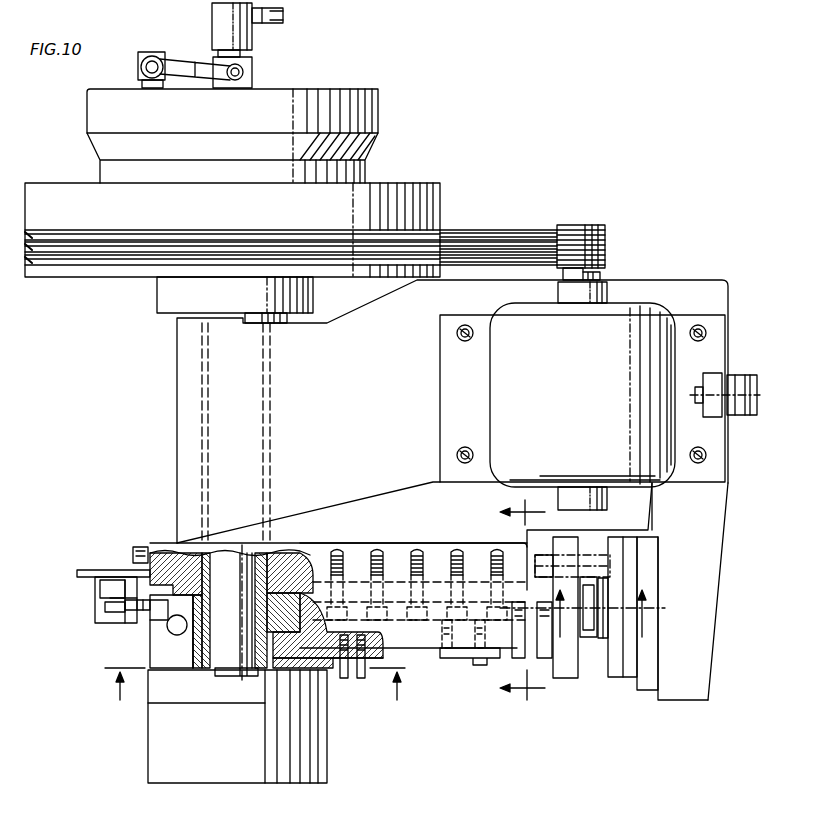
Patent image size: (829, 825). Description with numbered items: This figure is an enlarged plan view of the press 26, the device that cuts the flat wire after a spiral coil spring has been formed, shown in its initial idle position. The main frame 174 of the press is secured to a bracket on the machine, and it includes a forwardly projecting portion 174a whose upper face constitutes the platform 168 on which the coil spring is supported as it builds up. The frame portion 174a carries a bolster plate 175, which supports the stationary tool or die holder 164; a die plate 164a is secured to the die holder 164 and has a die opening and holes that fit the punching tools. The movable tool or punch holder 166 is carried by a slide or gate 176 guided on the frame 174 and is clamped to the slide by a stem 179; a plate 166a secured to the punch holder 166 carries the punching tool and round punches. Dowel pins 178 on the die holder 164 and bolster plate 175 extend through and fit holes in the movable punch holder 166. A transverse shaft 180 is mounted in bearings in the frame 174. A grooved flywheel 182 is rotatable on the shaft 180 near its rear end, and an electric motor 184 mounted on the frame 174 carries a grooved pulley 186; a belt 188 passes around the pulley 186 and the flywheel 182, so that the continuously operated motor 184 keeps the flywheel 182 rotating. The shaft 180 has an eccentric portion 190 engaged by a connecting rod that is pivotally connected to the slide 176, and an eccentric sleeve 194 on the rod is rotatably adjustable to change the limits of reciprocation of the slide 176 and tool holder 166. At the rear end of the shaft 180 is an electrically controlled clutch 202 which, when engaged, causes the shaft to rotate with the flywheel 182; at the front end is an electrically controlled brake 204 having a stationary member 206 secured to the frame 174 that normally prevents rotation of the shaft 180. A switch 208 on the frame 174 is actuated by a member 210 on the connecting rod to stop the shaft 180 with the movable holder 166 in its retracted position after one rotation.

The press 26 is at (554, 191).
The electrically controlled clutch 202 is at (88, 118).
The flywheel 182 is at (400, 188).
The belt 188 is at (488, 235).
The grooved pulley 186 is at (589, 229).
The electric motor 184 is at (572, 393).
The main frame of the press 174 is at (345, 421).
The forwardly projecting frame portion 174a is at (711, 620).
The transverse shaft 180 is at (210, 408).
The dowel pins 178 is at (586, 557).
The stem 179 is at (526, 585).
The slide or gate 176 is at (437, 613).
The platform 168 is at (692, 581).
The tool or punch holder 166 is at (578, 680).
The plate 166a is at (587, 640).
The stationary tool or die holder 164 is at (613, 680).
The die plate 164a is at (603, 640).
The bolster plate 175 is at (650, 677).
The eccentric portion 190 is at (228, 655).
The eccentric sleeve 194 is at (262, 668).
The electrically controlled brake 204 is at (148, 737).
The stationary member 206 is at (331, 703).
The switch 208 is at (105, 590).
The member 210 is at (148, 617).